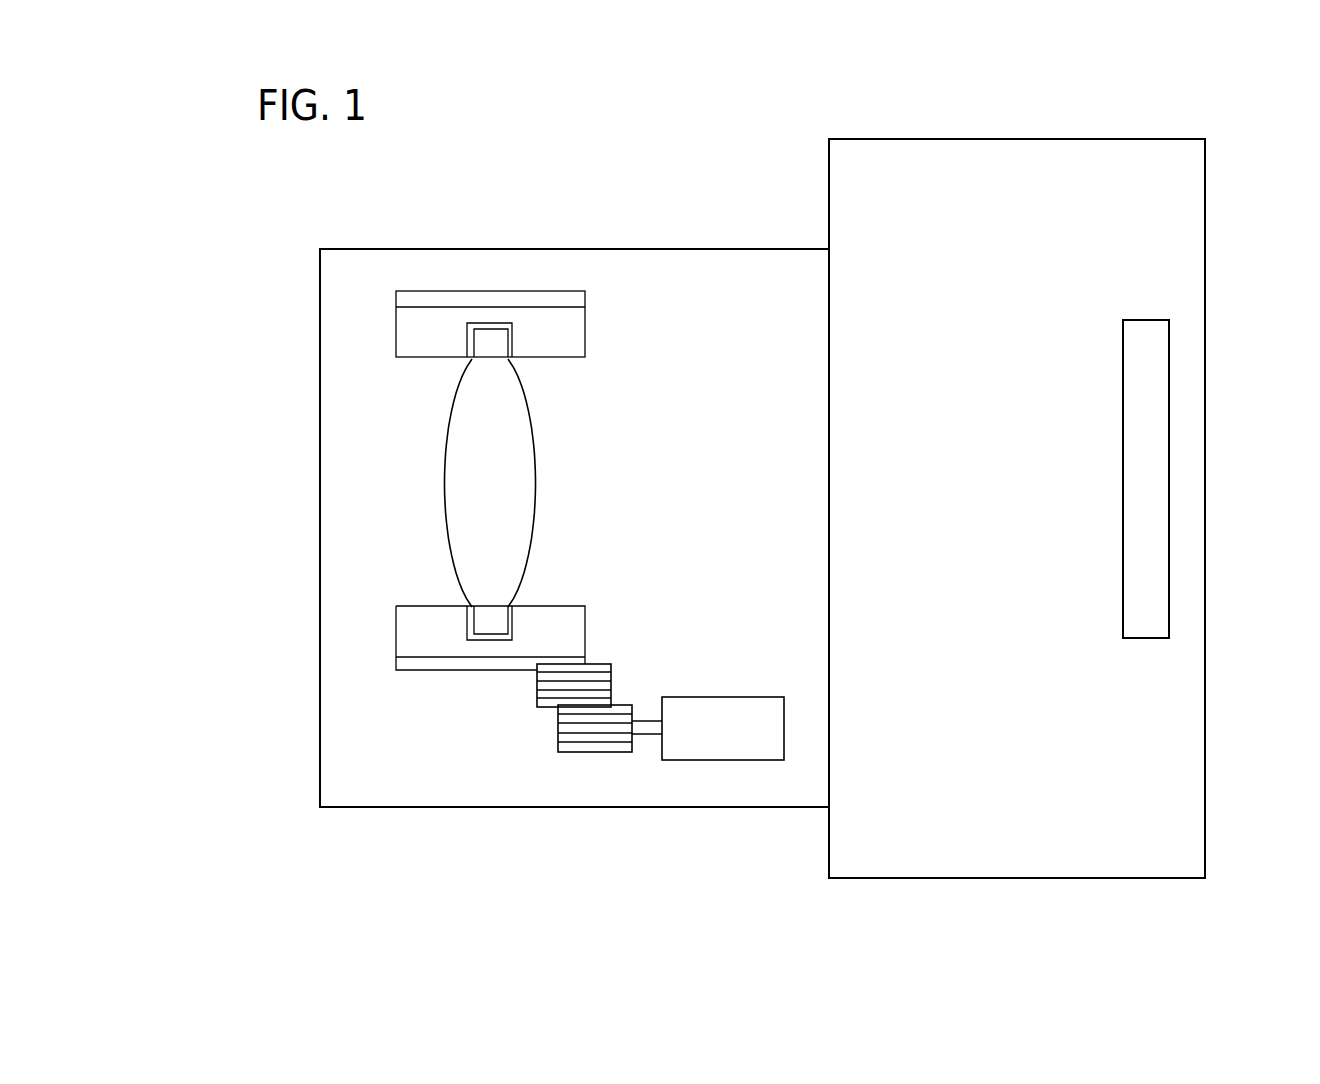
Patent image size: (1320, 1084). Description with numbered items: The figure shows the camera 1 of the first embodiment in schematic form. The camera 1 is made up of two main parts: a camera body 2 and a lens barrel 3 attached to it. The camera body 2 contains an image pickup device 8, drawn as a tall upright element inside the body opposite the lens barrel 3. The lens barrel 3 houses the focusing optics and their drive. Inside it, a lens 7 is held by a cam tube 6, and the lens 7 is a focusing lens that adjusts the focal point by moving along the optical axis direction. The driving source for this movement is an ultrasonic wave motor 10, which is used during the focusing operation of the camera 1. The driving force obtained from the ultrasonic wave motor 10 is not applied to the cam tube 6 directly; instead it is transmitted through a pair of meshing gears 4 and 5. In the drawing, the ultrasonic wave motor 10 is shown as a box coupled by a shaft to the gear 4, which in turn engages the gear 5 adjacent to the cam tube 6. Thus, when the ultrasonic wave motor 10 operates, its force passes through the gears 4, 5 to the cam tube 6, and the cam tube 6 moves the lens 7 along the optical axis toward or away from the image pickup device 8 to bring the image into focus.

The camera 1 is at (1256, 134).
The camera body 2 is at (1052, 862).
The lens barrel 3 is at (733, 273).
The gear 4 is at (607, 742).
The gear 5 is at (549, 698).
The cam tube 6 is at (427, 658).
The lens 7 is at (522, 486).
The image pickup device 8 is at (1133, 463).
The ultrasonic wave motor 10 is at (716, 713).